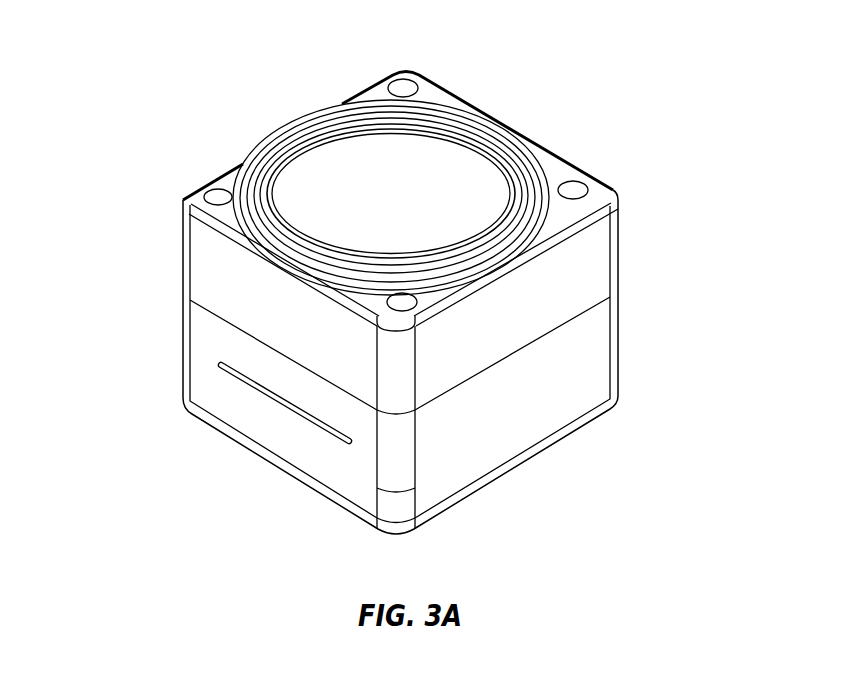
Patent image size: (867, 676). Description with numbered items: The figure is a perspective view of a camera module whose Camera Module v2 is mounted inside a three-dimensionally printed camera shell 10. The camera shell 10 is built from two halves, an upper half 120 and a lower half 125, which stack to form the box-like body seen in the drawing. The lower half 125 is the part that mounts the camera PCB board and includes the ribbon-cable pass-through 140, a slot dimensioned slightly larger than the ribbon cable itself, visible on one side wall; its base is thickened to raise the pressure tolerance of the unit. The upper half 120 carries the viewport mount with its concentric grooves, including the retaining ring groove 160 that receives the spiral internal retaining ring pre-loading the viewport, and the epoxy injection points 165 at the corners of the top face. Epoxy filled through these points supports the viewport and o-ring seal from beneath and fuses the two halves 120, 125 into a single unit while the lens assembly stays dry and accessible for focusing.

The camera shell 10 is at (219, 39).
The upper half 120 is at (222, 278).
The lower half 125 is at (512, 412).
The ribbon-cable pass-through 140 is at (265, 395).
The retaining ring groove 160 is at (513, 197).
The epoxy injection points 165 is at (572, 182).